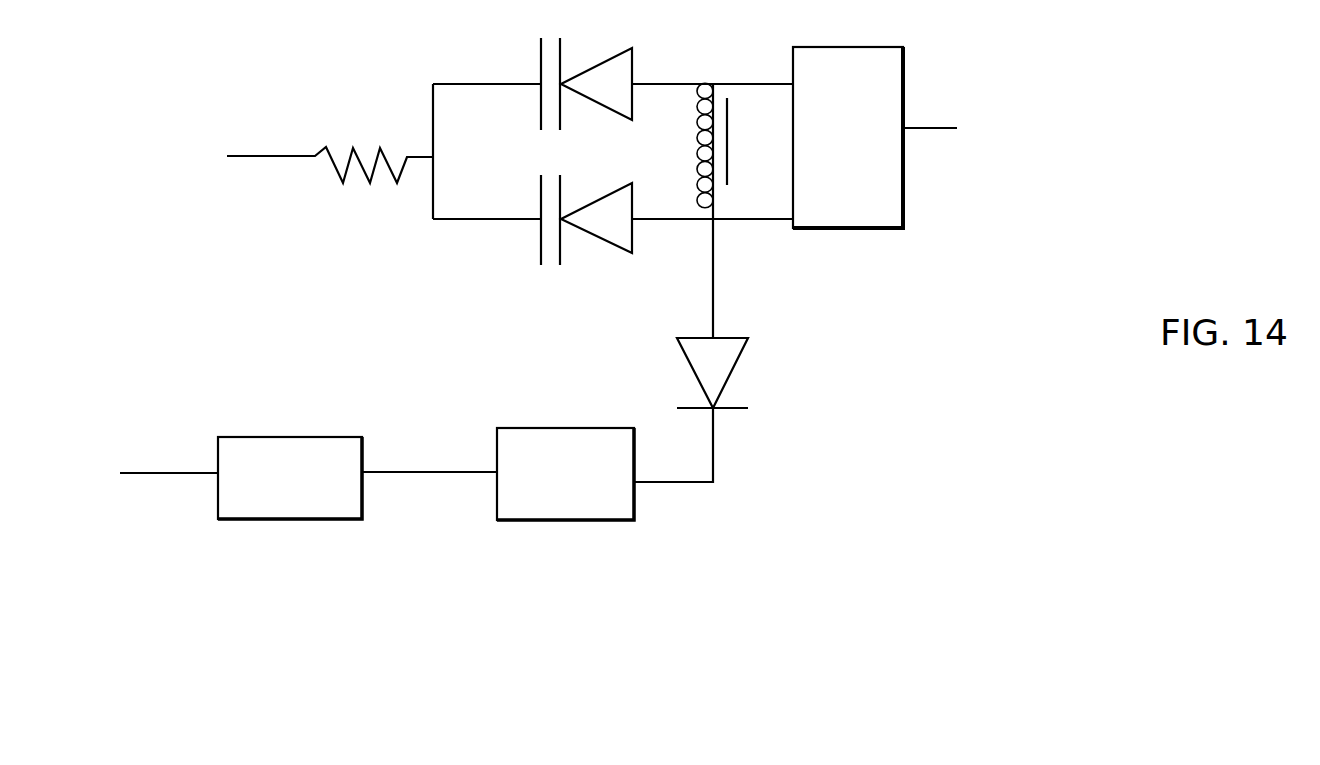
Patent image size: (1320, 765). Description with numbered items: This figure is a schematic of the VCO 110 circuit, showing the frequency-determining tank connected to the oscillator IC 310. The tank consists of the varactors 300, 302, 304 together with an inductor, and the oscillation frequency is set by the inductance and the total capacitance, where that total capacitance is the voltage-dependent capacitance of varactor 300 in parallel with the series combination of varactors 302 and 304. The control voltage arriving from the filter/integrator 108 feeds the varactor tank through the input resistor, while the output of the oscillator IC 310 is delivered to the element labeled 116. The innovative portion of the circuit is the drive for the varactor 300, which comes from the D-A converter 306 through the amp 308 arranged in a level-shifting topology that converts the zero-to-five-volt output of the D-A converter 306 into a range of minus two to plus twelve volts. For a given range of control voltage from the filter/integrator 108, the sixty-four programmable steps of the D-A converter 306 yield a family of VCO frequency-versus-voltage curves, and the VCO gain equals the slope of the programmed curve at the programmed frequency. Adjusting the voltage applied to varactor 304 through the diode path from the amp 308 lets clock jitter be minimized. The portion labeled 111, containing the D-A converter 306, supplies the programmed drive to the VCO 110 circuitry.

The filter/integrator 108 is at (277, 153).
The output to element 116 is at (958, 127).
The varactor 300 is at (563, 82).
The varactor 302 is at (562, 222).
The varactor 304 is at (713, 408).
The D-A converter 306 is at (730, 158).
The amp 308 is at (587, 520).
The oscillator IC 310 is at (858, 229).
The VCO 110 is at (662, 604).
The control circuit 111 is at (362, 604).